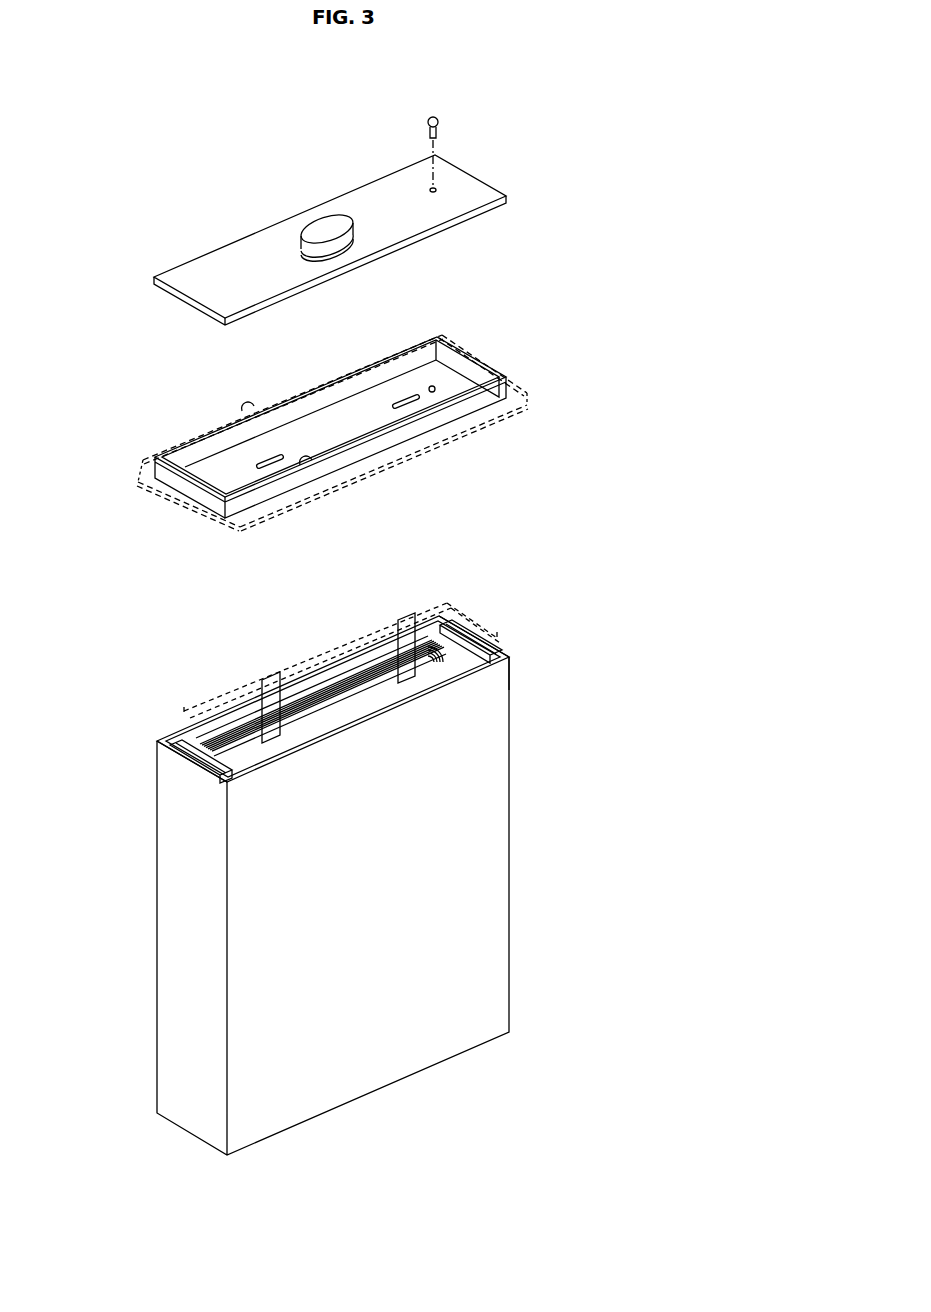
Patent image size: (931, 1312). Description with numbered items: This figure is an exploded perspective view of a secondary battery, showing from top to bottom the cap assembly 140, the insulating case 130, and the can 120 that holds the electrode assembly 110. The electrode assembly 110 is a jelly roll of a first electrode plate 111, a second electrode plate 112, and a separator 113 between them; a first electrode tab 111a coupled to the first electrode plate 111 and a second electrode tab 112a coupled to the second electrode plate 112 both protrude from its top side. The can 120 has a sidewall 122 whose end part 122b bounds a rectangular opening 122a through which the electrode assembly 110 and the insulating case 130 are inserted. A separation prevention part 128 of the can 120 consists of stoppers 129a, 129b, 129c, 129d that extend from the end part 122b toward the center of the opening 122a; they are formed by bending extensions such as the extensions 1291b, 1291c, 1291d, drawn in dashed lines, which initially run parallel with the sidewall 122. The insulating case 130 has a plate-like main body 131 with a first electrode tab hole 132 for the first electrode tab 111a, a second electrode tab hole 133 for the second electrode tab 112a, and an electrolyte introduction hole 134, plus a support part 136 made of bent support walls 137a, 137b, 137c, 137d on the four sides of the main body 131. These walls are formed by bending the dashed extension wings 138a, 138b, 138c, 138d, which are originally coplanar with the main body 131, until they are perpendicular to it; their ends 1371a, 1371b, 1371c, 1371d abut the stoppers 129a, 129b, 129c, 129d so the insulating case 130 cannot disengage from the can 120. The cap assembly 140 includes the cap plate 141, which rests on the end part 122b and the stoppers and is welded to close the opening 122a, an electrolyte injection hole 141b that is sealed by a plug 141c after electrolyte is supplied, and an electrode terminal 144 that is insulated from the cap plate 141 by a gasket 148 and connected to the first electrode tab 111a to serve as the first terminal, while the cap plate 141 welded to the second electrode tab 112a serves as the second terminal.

The electrode assembly 110 is at (458, 637).
The first electrode plate 111 is at (440, 645).
The first electrode tab 111a is at (408, 622).
The second electrode plate 112 is at (417, 617).
The second electrode tab 112a is at (273, 682).
The separator 113 is at (433, 648).
The can 120 is at (155, 897).
The sidewall 122 is at (515, 847).
The opening 122a is at (238, 727).
The end part 122b is at (160, 740).
The separation prevention part 128 is at (508, 660).
The stopper 129a is at (430, 684).
The stopper 129b is at (493, 645).
The stopper 129c is at (330, 678).
The stopper 129d is at (205, 757).
The extension 1291b is at (483, 623).
The extension 1291c is at (188, 705).
The extension 1291d is at (185, 722).
The insulating case 130 is at (547, 403).
The main body 131 is at (337, 413).
The first electrode tab hole 132 is at (408, 398).
The second electrode tab hole 133 is at (260, 457).
The electrolyte introduction hole 134 is at (432, 386).
The support part 136 is at (437, 335).
The support wall 137a is at (458, 407).
The support wall 137b is at (447, 353).
The support wall 137c is at (215, 447).
The support wall 137d is at (190, 468).
The end 1371a is at (320, 492).
The end 1371b is at (458, 343).
The end 1371c is at (180, 445).
The end 1371d is at (167, 450).
The extension wing 138a is at (267, 510).
The extension wing 138b is at (527, 382).
The extension wing 138c is at (355, 368).
The extension wing 138d is at (203, 518).
The cap assembly 140 is at (140, 262).
The cap plate 141 is at (222, 257).
The electrolyte injection hole 141b is at (437, 190).
The plug 141c is at (435, 117).
The electrode terminal 144 is at (328, 222).
The gasket 148 is at (302, 233).